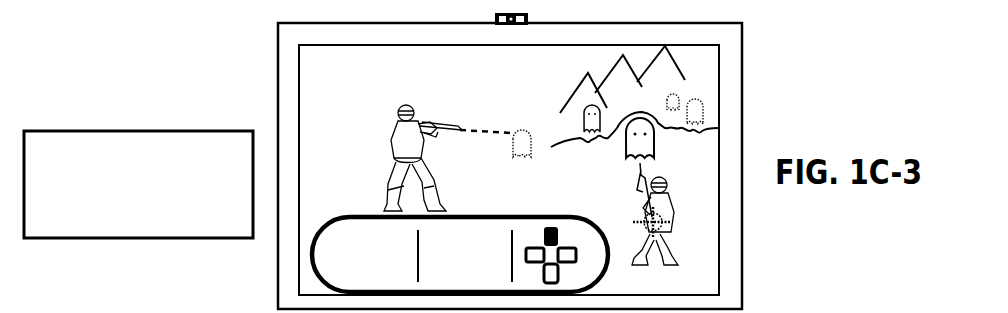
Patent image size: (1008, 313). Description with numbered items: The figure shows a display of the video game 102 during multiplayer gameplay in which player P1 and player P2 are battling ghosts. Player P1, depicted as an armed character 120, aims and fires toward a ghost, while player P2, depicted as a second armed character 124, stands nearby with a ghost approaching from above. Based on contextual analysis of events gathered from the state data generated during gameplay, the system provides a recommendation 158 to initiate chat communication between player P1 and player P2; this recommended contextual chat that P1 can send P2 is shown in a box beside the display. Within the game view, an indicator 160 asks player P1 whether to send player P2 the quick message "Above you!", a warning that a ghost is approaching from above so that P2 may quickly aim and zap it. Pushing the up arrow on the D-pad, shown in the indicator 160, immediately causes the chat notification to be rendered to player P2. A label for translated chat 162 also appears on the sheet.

The video game 102 is at (715, 100).
The first player P1 avatar 120 is at (414, 104).
The second player P2 avatar 124 is at (664, 191).
The recommendation 158 is at (131, 131).
The indicator 160 is at (532, 217).
The translated chat 162 is at (140, 302).